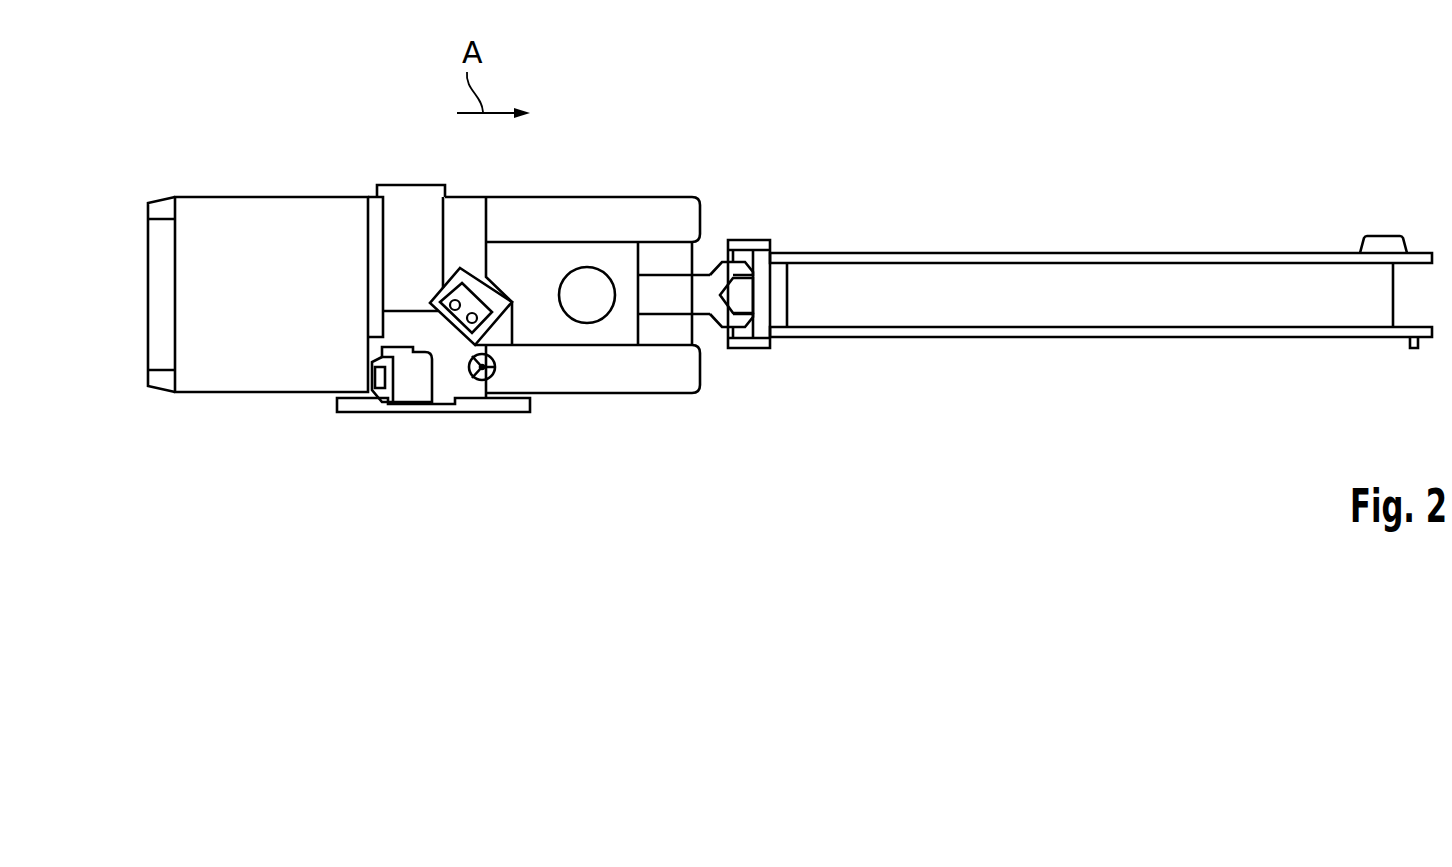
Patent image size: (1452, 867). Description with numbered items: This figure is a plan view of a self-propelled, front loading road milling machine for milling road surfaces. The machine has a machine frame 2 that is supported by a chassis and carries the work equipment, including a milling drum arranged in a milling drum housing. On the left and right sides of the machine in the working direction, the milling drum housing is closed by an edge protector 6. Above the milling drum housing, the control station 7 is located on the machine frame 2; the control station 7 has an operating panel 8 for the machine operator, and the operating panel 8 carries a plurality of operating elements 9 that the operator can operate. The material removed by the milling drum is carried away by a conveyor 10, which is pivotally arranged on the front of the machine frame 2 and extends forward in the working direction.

The machine frame 2 is at (132, 251).
The edge protector 6 is at (357, 414).
The control station 7 is at (504, 354).
The operating panel 8 is at (449, 342).
The operating elements 9 is at (476, 315).
The conveyor 10 is at (1070, 221).